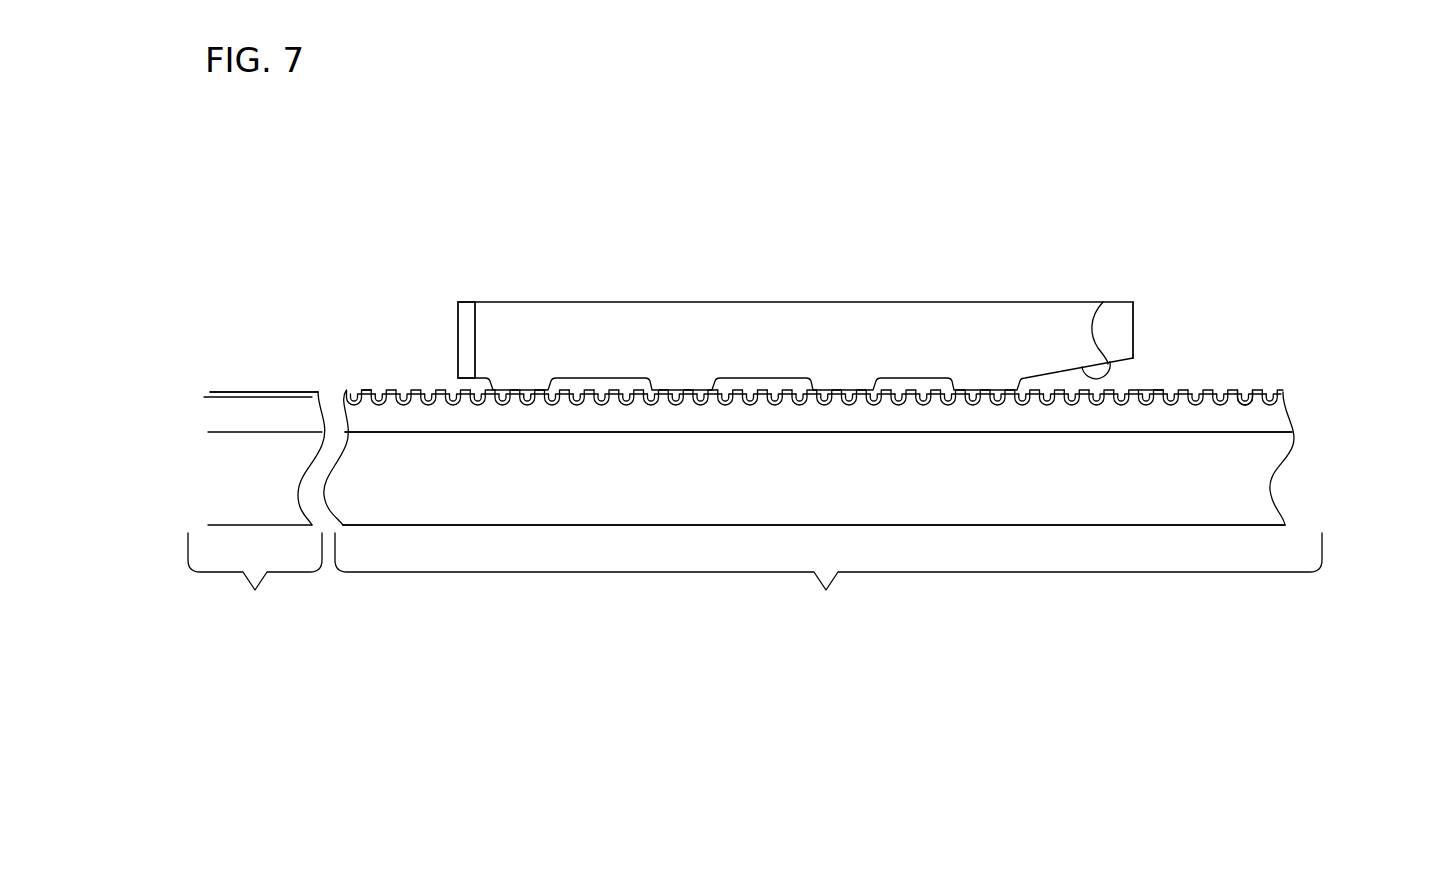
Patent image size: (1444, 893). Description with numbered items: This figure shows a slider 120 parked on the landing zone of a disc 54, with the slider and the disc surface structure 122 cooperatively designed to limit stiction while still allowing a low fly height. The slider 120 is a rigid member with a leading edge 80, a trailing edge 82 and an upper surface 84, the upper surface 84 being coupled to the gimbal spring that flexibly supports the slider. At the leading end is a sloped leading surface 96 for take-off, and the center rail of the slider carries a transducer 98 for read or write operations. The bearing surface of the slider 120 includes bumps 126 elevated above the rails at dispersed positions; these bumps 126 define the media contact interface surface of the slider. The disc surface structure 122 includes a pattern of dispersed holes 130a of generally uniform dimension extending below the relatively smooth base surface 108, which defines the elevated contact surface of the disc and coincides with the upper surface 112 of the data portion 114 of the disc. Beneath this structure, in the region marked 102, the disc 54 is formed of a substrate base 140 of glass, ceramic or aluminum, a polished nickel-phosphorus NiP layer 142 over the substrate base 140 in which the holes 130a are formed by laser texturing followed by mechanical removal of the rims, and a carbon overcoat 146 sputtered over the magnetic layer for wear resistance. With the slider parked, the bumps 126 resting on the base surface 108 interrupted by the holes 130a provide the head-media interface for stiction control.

The disc 54 is at (1332, 266).
The leading edge 80 is at (1135, 330).
The trailing edge 82 is at (455, 318).
The upper surface 84 is at (957, 302).
The sloped leading surface 96 is at (1103, 302).
The transducer 98 is at (462, 302).
The substrate 102 is at (789, 448).
The base surface 108 is at (365, 392).
The upper surface 112 is at (245, 379).
The data portion 114 is at (256, 470).
The slider 120 is at (802, 288).
The disc surface structure 122 is at (1180, 377).
The bumps 126 is at (517, 383).
The holes 130a is at (1244, 377).
The substrate base 140 is at (1260, 493).
The NiP layer 142 is at (1283, 417).
The carbon overcoat 146 is at (212, 392).